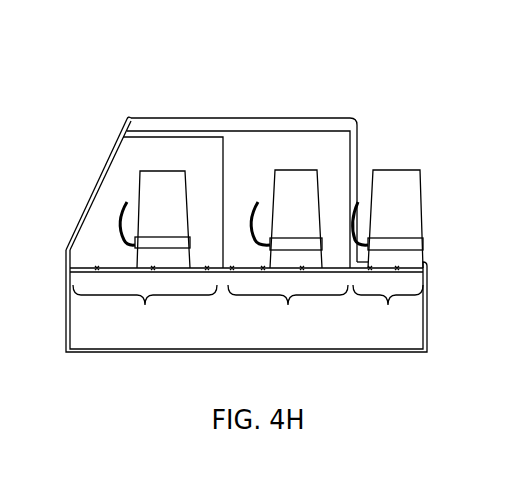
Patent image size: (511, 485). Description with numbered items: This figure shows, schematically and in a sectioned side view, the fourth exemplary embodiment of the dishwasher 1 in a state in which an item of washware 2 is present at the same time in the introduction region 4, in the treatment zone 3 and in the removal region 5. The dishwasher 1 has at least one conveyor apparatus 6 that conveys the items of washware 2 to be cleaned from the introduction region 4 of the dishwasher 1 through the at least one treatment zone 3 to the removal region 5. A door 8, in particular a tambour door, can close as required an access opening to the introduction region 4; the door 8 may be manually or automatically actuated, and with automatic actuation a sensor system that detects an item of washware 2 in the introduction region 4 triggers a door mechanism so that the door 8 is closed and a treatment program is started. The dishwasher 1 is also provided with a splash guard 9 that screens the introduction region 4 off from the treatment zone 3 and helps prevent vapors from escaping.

The dishwasher 1 is at (366, 72).
The item of washware 2 is at (175, 198).
The treatment zone 3 is at (288, 309).
The introduction region 4 is at (145, 309).
The removal region 5 is at (388, 309).
The conveyor apparatus 6 is at (92, 270).
The door 8 is at (98, 177).
The splash guard 9 is at (222, 177).